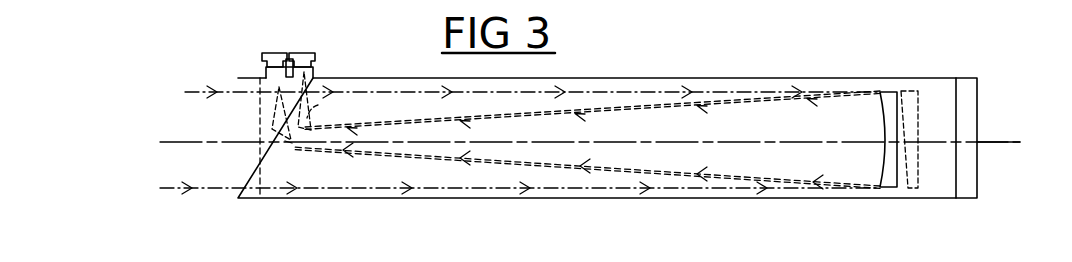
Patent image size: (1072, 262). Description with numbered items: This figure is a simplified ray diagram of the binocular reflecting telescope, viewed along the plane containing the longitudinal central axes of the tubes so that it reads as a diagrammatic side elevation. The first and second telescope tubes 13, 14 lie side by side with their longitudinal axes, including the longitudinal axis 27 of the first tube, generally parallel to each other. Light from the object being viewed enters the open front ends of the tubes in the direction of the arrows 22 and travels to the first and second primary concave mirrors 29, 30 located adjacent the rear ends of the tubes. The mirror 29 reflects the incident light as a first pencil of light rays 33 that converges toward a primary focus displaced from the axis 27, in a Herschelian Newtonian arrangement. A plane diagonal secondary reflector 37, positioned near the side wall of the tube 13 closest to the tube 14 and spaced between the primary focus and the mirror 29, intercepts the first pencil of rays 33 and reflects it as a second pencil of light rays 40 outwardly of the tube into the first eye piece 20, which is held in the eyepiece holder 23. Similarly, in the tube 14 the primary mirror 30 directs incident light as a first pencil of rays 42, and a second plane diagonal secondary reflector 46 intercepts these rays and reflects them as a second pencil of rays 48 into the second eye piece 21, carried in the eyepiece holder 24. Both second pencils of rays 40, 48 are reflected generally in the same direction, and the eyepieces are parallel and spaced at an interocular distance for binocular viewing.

The first telescope tube 13 is at (802, 80).
The second telescope tube 14 is at (963, 80).
The first eye piece 20 is at (276, 52).
The second eye piece 21 is at (307, 51).
The arrows 22 is at (186, 141).
The eyepiece holder 23 is at (266, 69).
The eyepiece holder 24 is at (312, 72).
The longitudinal axis 27 is at (1018, 124).
The first primary concave mirror 29 is at (887, 175).
The second primary concave mirror 30 is at (908, 189).
The first pencil of light rays 33 is at (613, 110).
The plane diagonal secondary reflector 37 is at (284, 145).
The second pencil of light rays 40 is at (279, 108).
The first pencil of rays 42 is at (680, 103).
The second plane diagonal secondary reflector 46 is at (303, 132).
The second pencil of rays 48 is at (318, 105).